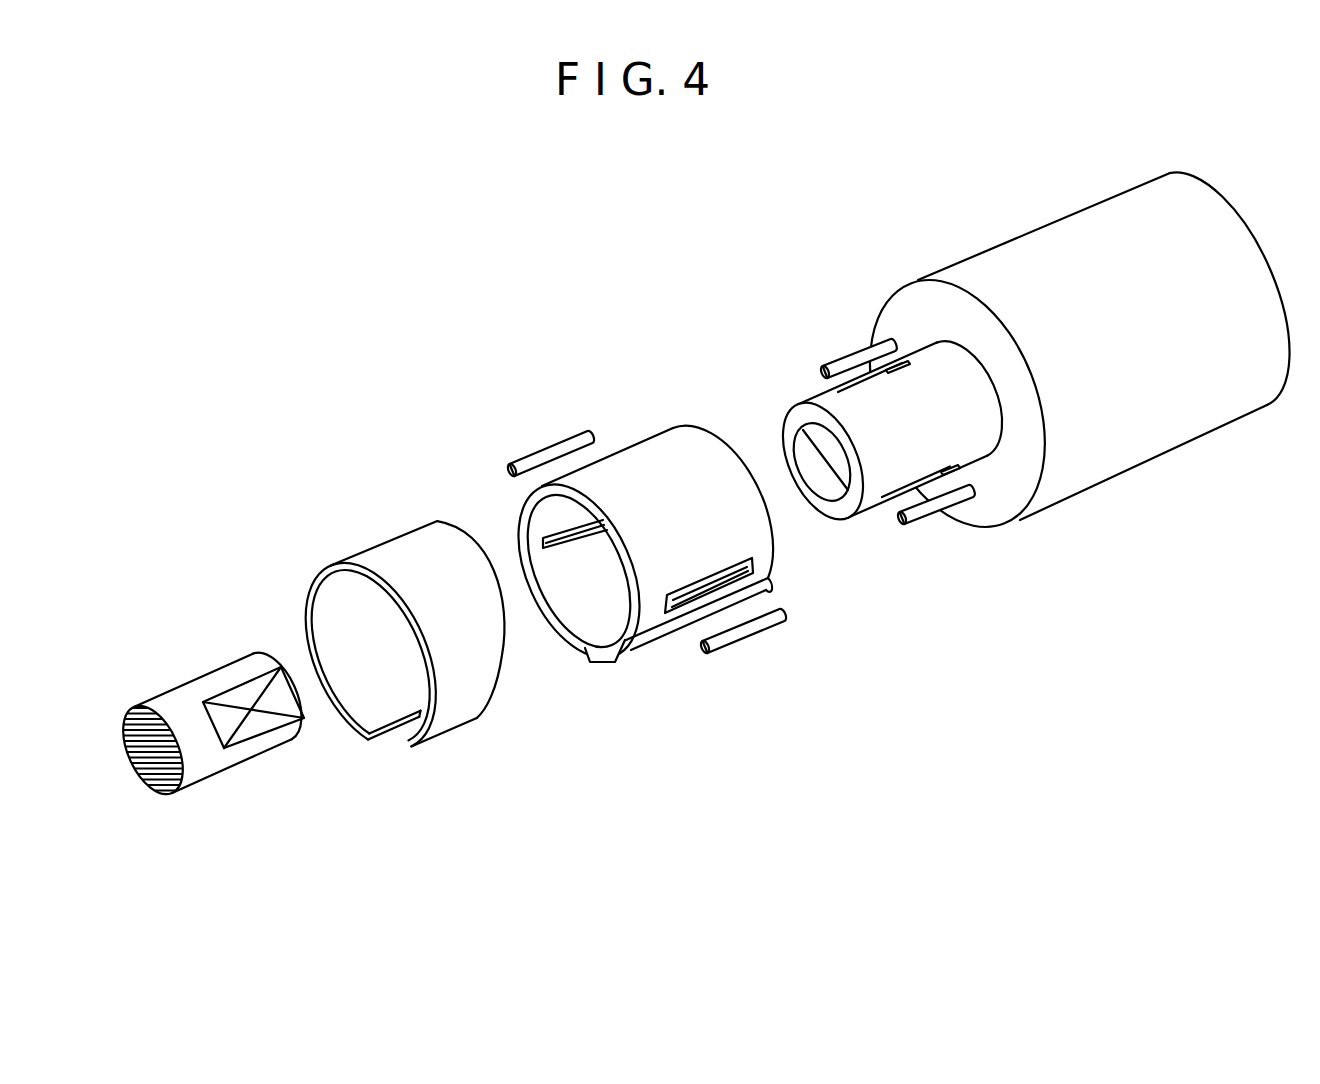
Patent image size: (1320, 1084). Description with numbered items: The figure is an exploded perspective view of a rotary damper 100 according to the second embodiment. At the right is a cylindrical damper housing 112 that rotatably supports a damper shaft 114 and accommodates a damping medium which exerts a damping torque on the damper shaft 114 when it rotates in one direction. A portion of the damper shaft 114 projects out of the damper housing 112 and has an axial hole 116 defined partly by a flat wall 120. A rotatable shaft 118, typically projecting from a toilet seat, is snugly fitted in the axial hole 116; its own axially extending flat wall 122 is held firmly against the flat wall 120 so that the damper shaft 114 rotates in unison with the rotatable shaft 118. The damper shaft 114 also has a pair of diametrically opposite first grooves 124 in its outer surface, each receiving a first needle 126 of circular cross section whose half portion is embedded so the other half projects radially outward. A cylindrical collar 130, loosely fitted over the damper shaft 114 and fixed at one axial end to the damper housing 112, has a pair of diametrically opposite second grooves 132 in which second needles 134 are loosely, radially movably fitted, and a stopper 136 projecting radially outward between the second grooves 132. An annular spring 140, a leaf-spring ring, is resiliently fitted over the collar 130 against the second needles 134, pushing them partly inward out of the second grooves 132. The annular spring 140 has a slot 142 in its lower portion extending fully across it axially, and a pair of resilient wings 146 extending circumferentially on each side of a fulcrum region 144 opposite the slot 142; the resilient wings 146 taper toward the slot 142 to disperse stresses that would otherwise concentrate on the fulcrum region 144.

The rotary damper 100 is at (243, 493).
The damper housing 112 is at (1180, 430).
The damper shaft 114 is at (967, 408).
The axial hole 116 is at (835, 490).
The rotatable shaft 118 is at (200, 760).
The flat wall 120 is at (802, 430).
The flat wall 122 is at (232, 690).
The first grooves 124 is at (893, 368).
The first needles 126 is at (850, 357).
The collar 130 is at (655, 430).
The second grooves 132 is at (566, 553).
The second needles 134 is at (543, 452).
The stopper 136 is at (613, 665).
The annular spring 140 is at (343, 559).
The slot 142 is at (400, 742).
The fulcrum region 144 is at (388, 541).
The resilient wings 146 is at (305, 636).